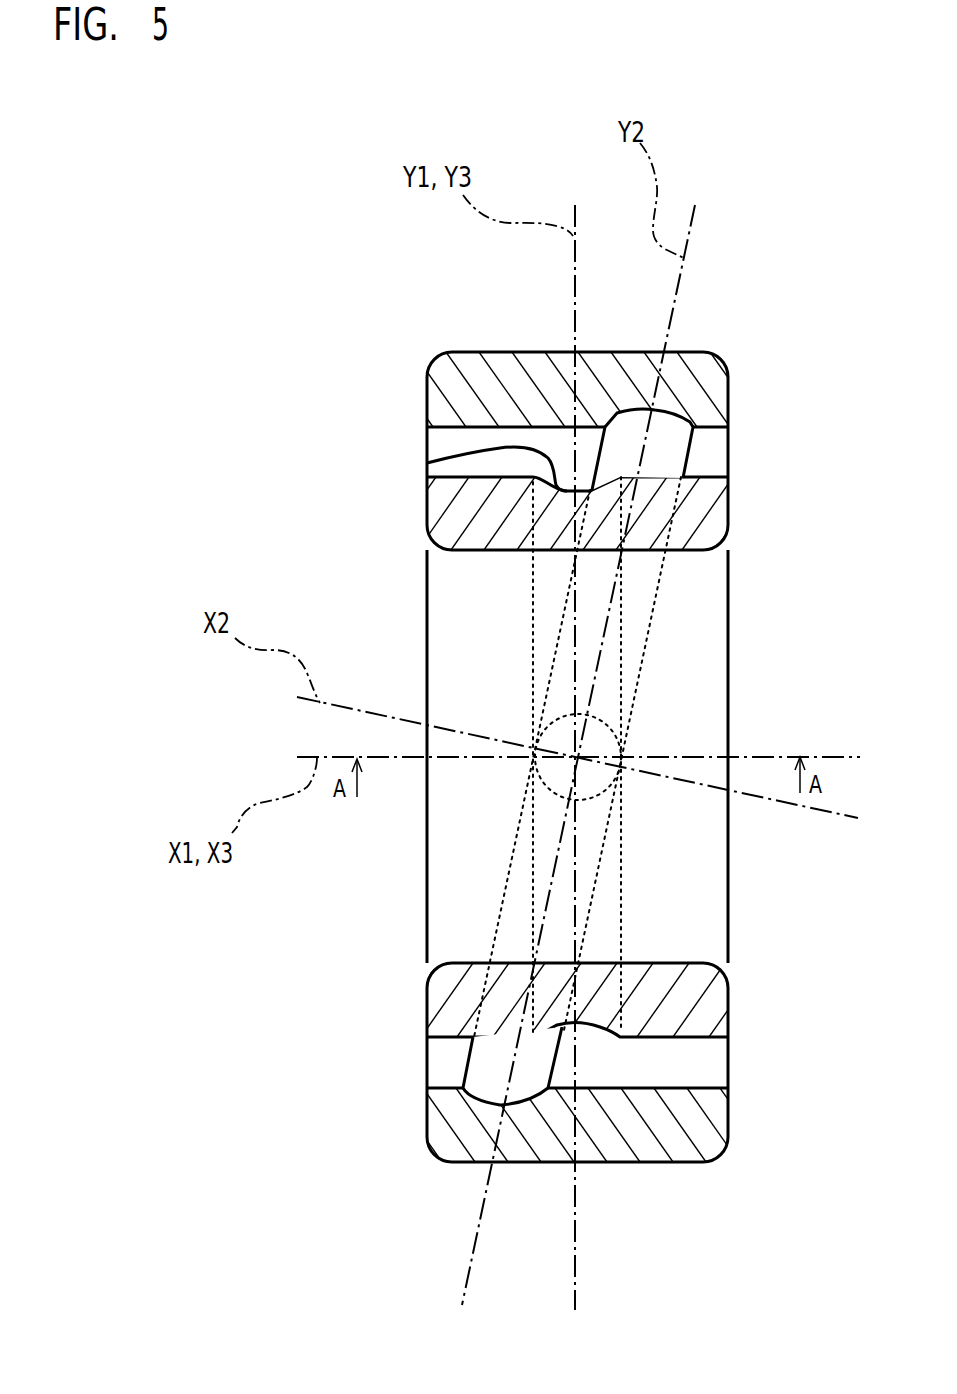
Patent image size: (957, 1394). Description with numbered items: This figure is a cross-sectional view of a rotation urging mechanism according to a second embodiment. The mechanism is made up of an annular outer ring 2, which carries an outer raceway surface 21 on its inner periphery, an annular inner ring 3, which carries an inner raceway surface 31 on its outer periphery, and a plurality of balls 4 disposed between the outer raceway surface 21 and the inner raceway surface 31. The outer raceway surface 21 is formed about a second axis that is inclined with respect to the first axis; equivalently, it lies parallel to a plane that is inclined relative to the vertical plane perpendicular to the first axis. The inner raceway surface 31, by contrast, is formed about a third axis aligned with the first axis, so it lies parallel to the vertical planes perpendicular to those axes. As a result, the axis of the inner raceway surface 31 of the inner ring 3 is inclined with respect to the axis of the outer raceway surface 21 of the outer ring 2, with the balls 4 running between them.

The outer ring 2 is at (707, 393).
The inner ring 3 is at (707, 515).
The outer raceway surface 21 is at (641, 405).
The inner raceway surface 31 is at (427, 463).
The balls 4 is at (618, 808).